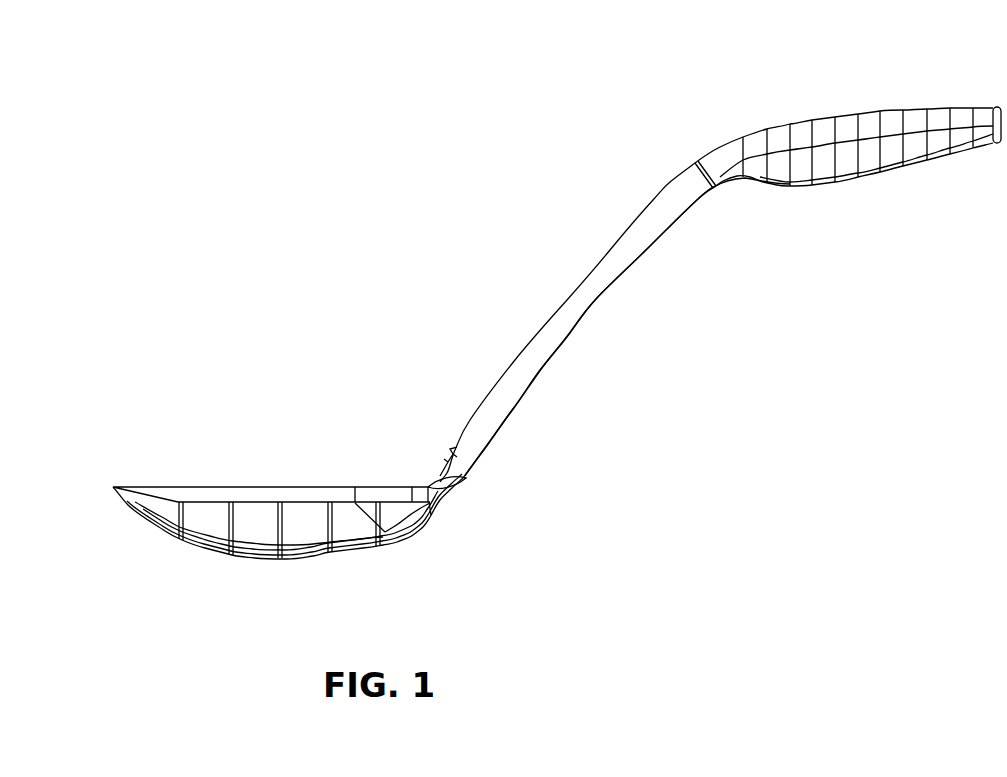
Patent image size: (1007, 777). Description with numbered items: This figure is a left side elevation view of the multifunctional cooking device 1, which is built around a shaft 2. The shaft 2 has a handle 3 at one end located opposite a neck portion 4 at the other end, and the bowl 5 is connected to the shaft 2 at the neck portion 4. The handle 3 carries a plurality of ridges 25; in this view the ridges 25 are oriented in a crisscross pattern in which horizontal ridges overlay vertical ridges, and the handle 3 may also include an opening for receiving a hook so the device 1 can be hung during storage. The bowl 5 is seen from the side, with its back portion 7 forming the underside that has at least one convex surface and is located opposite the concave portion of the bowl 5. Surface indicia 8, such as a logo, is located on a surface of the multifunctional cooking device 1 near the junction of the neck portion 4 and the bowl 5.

The multifunctional cooking device 1 is at (363, 277).
The shaft 2 is at (530, 383).
The handle 3 is at (813, 183).
The ridges 25 is at (812, 123).
The neck portion 4 is at (430, 483).
The bowl 5 is at (263, 497).
The back portion 7 is at (383, 533).
The surface indicia 8 is at (440, 463).